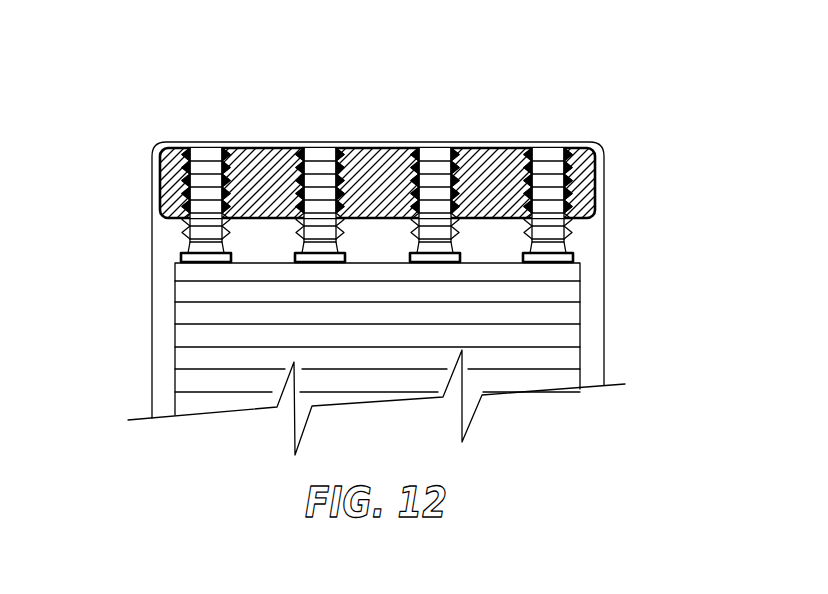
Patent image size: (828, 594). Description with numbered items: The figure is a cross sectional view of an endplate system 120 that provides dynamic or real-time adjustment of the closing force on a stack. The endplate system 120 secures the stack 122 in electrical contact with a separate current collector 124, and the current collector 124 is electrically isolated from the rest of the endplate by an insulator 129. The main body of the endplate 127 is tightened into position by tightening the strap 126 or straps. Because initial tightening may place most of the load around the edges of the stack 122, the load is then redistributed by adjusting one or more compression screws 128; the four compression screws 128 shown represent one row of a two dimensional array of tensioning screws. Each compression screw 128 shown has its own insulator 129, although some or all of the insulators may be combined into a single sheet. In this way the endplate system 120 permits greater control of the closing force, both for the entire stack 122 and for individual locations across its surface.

The endplate system 120 is at (323, 85).
The stack 122 is at (580, 338).
The current collector 124 is at (580, 277).
The strap 126 is at (375, 143).
The main body of the endplate 127 is at (593, 184).
The compression screws 128 is at (303, 163).
The insulator 129 is at (320, 256).